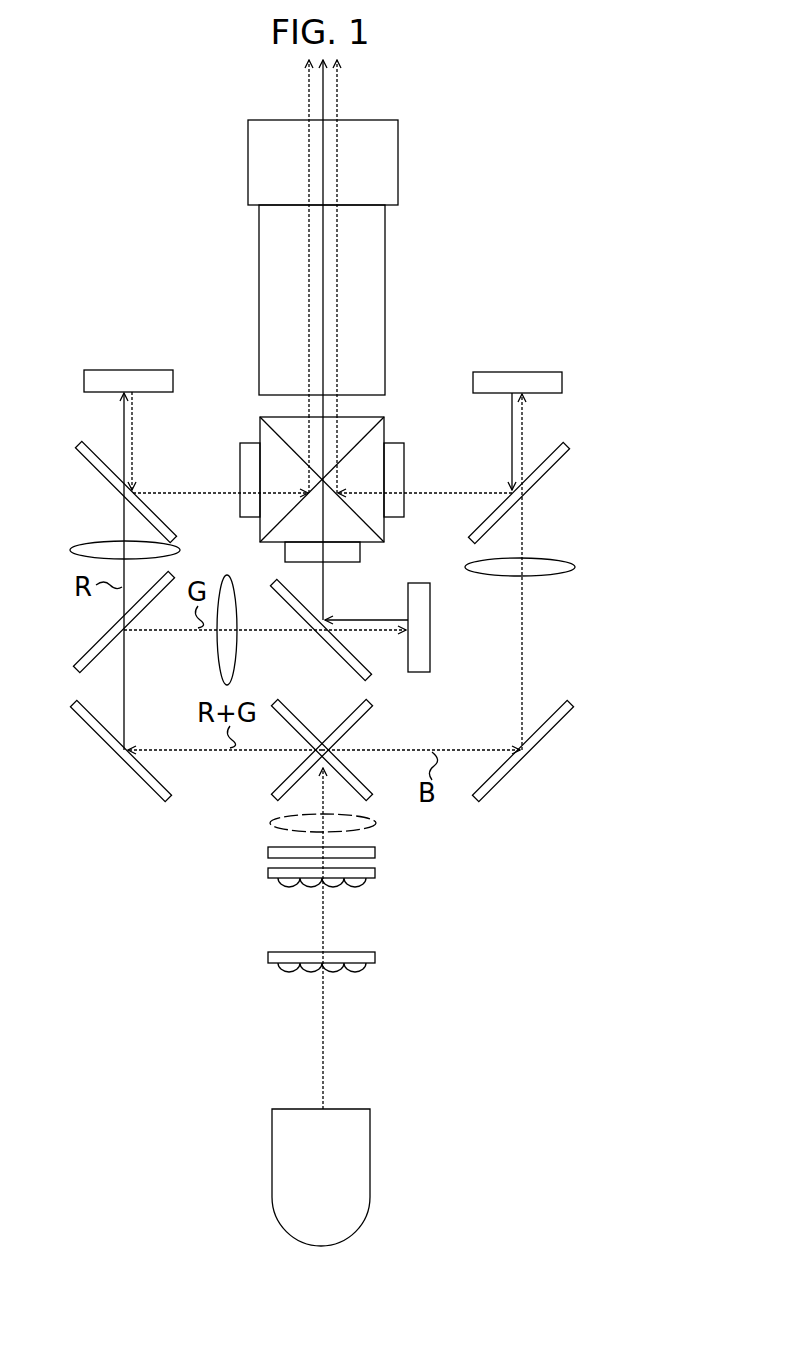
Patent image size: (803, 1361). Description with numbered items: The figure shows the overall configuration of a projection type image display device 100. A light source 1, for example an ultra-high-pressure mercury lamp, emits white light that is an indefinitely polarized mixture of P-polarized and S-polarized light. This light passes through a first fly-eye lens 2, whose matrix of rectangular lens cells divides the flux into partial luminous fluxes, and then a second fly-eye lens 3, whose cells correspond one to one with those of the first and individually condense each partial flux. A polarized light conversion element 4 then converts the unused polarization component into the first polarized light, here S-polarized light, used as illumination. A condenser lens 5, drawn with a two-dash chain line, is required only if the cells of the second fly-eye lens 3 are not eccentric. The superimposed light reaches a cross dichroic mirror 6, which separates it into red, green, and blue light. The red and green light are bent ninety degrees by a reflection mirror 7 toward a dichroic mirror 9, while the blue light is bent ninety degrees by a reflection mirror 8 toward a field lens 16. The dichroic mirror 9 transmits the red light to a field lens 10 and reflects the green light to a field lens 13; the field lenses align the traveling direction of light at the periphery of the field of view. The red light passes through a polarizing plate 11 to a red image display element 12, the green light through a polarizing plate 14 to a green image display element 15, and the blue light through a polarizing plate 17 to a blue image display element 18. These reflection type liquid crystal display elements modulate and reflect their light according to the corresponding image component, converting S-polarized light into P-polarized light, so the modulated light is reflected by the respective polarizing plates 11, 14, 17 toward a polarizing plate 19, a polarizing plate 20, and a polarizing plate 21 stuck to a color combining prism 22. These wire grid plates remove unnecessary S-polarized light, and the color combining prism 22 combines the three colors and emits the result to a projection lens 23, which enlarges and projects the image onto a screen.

The projection type image display device 100 is at (557, 238).
The light source 1 is at (277, 1152).
The first fly-eye lens 2 is at (268, 958).
The second fly-eye lens 3 is at (268, 878).
The polarized light conversion element 4 is at (268, 852).
The condenser lens 5 is at (270, 822).
The cross dichroic mirror 6 is at (348, 728).
The reflection mirror 7 is at (104, 748).
The reflection mirror 8 is at (556, 730).
The dichroic mirror 9 is at (92, 650).
The field lens 10 is at (180, 550).
The polarizing plate 11 is at (95, 475).
The red image display element 12 is at (137, 370).
The field lens 13 is at (222, 657).
The polarizing plate 14 is at (347, 662).
The green image display element 15 is at (418, 655).
The field lens 16 is at (575, 567).
The polarizing plate 17 is at (556, 460).
The blue image display element 18 is at (556, 383).
The polarizing plate 19 is at (248, 465).
The polarizing plate 20 is at (330, 556).
The polarizing plate 21 is at (396, 463).
The color combining prism 22 is at (365, 425).
The projection lens 23 is at (398, 165).